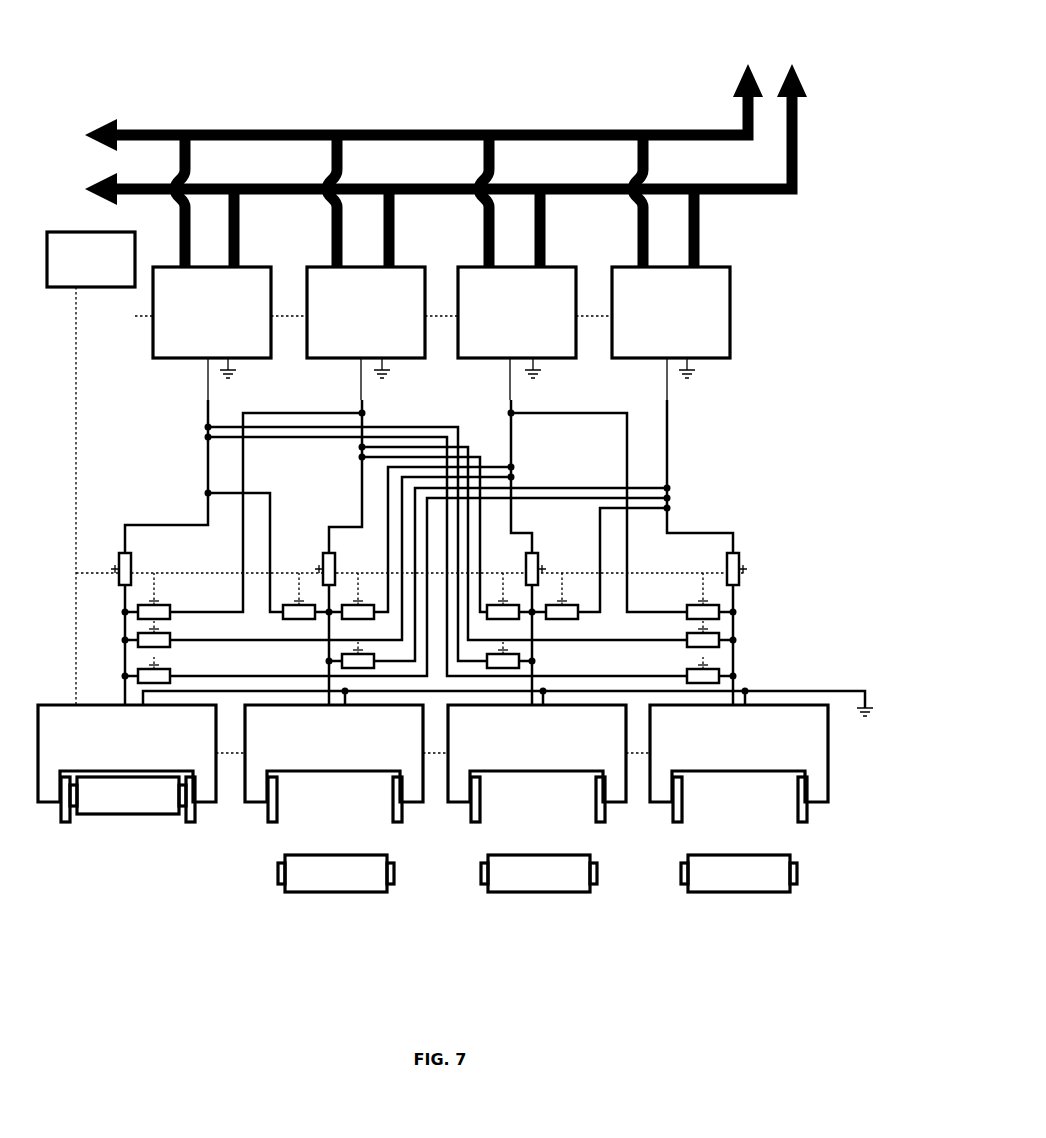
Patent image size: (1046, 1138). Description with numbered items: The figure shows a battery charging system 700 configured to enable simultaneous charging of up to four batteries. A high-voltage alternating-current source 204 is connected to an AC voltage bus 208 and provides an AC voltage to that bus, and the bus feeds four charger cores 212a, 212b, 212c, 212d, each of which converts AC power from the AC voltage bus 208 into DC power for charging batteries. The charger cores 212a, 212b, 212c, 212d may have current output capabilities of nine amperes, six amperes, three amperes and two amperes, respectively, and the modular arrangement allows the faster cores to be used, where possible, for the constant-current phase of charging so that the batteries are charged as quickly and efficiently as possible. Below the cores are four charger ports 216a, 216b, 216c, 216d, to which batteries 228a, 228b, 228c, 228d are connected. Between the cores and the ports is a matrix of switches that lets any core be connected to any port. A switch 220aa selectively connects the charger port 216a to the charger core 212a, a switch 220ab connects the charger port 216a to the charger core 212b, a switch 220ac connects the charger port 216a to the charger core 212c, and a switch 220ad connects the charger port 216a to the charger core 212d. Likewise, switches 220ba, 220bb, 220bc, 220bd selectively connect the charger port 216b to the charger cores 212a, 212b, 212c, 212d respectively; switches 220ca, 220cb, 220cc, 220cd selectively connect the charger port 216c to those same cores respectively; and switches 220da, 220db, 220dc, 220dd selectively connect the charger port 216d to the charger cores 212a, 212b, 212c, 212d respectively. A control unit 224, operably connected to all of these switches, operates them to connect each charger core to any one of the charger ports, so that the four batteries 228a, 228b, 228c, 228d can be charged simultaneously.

The battery charging system 700 is at (72, 42).
The high-voltage alternating-current source 204 is at (697, 19).
The AC voltage bus 208 is at (386, 130).
The charger core 212a is at (272, 284).
The charger core 212b is at (426, 284).
The charger core 212c is at (577, 284).
The charger core 212d is at (731, 284).
The control unit 224 is at (135, 262).
The charger port 216a is at (52, 803).
The charger port 216b is at (257, 803).
The charger port 216c is at (460, 803).
The charger port 216d is at (662, 803).
The battery 228a is at (127, 814).
The battery 228b is at (337, 893).
The battery 228c is at (540, 893).
The battery 228d is at (743, 893).
The switch 220aa is at (118, 558).
The switch 220ab is at (166, 603).
The switch 220ac is at (168, 636).
The switch 220ad is at (169, 667).
The switch 220ba is at (290, 603).
The switch 220bb is at (322, 558).
The switch 220bc is at (360, 603).
The switch 220bd is at (342, 652).
The switch 220ca is at (518, 654).
The switch 220cb is at (503, 603).
The switch 220cc is at (539, 560).
The switch 220cd is at (575, 603).
The switch 220da is at (717, 669).
The switch 220db is at (717, 633).
The switch 220dc is at (716, 605).
The switch 220dd is at (740, 557).